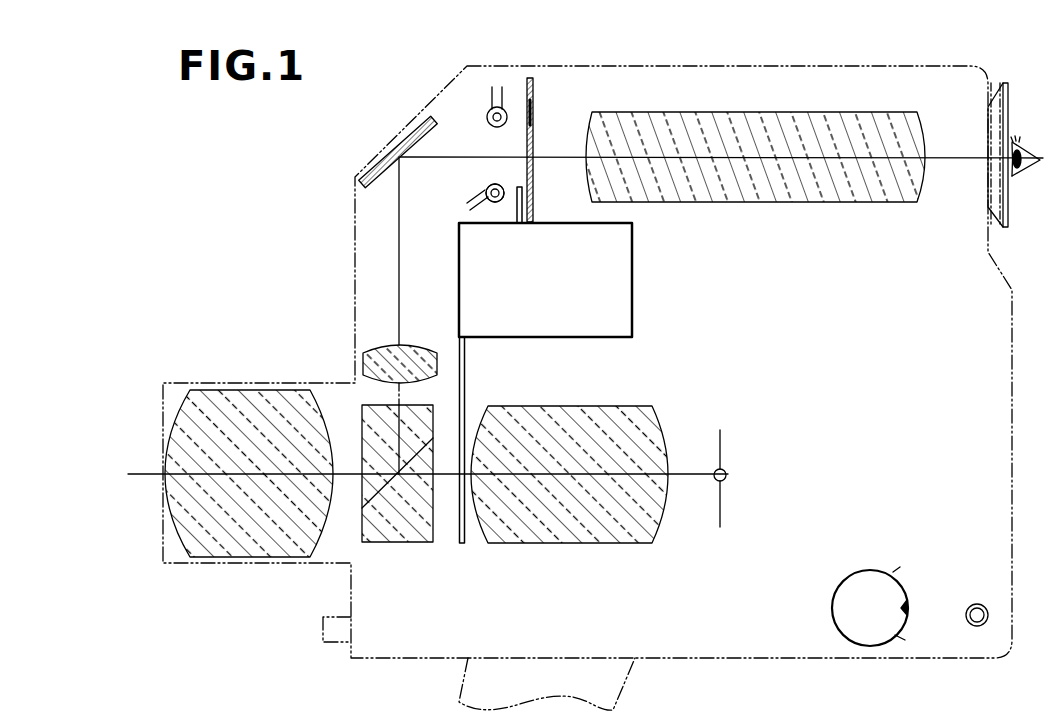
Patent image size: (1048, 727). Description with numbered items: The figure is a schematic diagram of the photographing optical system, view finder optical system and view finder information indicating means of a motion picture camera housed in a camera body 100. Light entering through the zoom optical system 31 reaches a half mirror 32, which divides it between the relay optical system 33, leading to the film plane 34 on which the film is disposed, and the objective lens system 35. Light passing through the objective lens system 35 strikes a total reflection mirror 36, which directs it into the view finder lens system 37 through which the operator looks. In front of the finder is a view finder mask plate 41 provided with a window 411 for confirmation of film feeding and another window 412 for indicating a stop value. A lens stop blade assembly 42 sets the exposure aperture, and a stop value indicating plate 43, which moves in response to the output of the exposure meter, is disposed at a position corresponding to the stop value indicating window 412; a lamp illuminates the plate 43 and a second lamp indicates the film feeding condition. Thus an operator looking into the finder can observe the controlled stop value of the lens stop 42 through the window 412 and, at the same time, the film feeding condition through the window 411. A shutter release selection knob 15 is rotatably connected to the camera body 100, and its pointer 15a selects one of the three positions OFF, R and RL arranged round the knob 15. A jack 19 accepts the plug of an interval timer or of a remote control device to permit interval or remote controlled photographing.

The camera body 100 is at (700, 62).
The zoom optical system 31 is at (223, 548).
The half mirror 32 is at (395, 535).
The relay optical system 33 is at (557, 543).
The film plane 34 is at (718, 515).
The objective lens system 35 is at (420, 348).
The total reflection mirror 36 is at (367, 173).
The view finder lens system 37 is at (815, 120).
The view finder mask plate 41 is at (533, 90).
The film feeding confirmation window 411 is at (533, 112).
The stop value indicating window 412 is at (533, 192).
The lens stop blade assembly 42 is at (465, 373).
The stop value indicating plate 43 is at (500, 187).
The shutter release selection knob 15 is at (838, 600).
The pointer 15a is at (908, 596).
The jack 19 is at (988, 613).